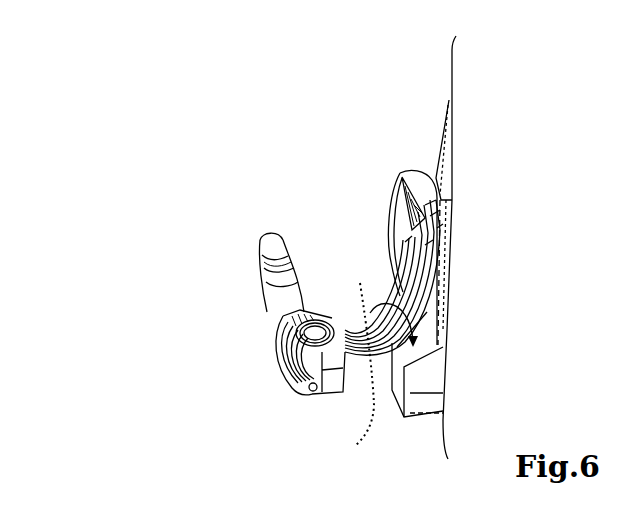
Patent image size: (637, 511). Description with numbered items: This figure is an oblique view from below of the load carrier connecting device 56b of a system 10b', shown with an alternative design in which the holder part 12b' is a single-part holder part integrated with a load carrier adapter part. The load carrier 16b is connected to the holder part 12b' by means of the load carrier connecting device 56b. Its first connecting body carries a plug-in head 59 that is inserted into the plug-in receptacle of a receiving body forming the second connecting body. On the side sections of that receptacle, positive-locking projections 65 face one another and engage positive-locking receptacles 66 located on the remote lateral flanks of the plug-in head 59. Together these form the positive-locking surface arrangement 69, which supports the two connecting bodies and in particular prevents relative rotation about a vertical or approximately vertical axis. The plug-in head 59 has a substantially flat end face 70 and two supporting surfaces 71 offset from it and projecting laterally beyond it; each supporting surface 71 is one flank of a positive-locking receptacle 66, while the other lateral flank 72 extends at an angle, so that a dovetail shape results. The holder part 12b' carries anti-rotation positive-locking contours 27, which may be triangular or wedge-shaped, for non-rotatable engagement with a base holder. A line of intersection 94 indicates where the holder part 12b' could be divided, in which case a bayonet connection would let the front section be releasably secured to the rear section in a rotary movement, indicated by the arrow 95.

The system 10b' is at (110, 178).
The load carrier 16b is at (446, 166).
The supporting surfaces 71 is at (402, 177).
The plug-in head 59 is at (397, 228).
The positive-locking projections 65 is at (430, 205).
The positive-locking receptacles 66 is at (436, 212).
The lateral flank 72 is at (442, 226).
The load carrier connecting device 56b is at (451, 228).
The positive-locking surface arrangement 69 is at (407, 242).
The end face 70 is at (428, 243).
The anti-rotation positive-locking contours 27 is at (270, 288).
The pivoting movement 95 is at (412, 326).
The holder part 12b' is at (256, 352).
The line of intersection 94 is at (353, 372).